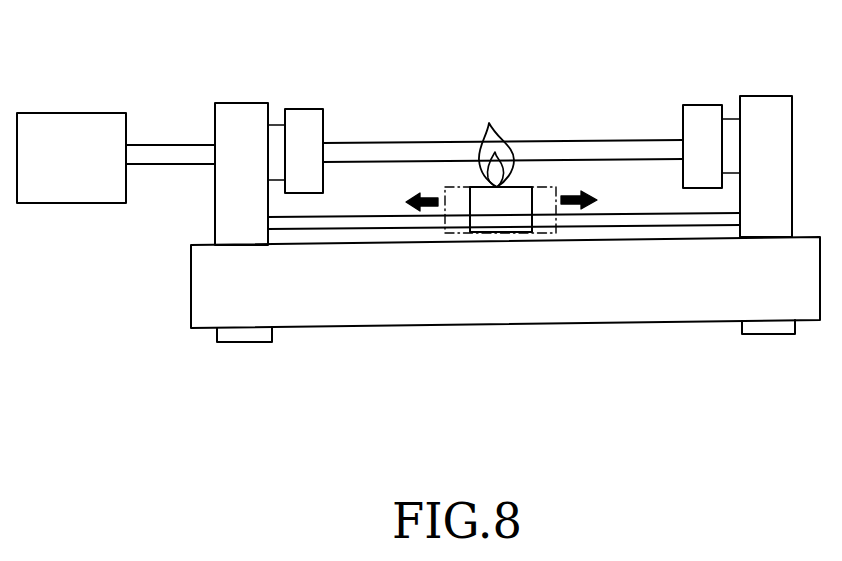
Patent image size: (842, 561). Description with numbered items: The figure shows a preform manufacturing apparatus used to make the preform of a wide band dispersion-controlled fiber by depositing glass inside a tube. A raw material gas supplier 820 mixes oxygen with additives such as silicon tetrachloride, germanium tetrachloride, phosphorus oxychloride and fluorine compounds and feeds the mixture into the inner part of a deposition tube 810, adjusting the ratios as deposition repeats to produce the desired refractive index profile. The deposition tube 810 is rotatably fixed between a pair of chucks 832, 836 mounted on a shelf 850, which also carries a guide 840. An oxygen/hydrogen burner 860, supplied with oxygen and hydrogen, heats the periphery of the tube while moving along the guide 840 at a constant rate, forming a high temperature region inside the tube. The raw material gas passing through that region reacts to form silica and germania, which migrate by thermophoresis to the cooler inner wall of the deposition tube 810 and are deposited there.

The deposition tube 810 is at (597, 140).
The raw material gas supplier 820 is at (75, 113).
The chuck 832 is at (243, 103).
The chuck 836 is at (768, 96).
The guide 840 is at (372, 215).
The shelf 850 is at (160, 292).
The oxygen/hydrogen burner 860 is at (498, 232).